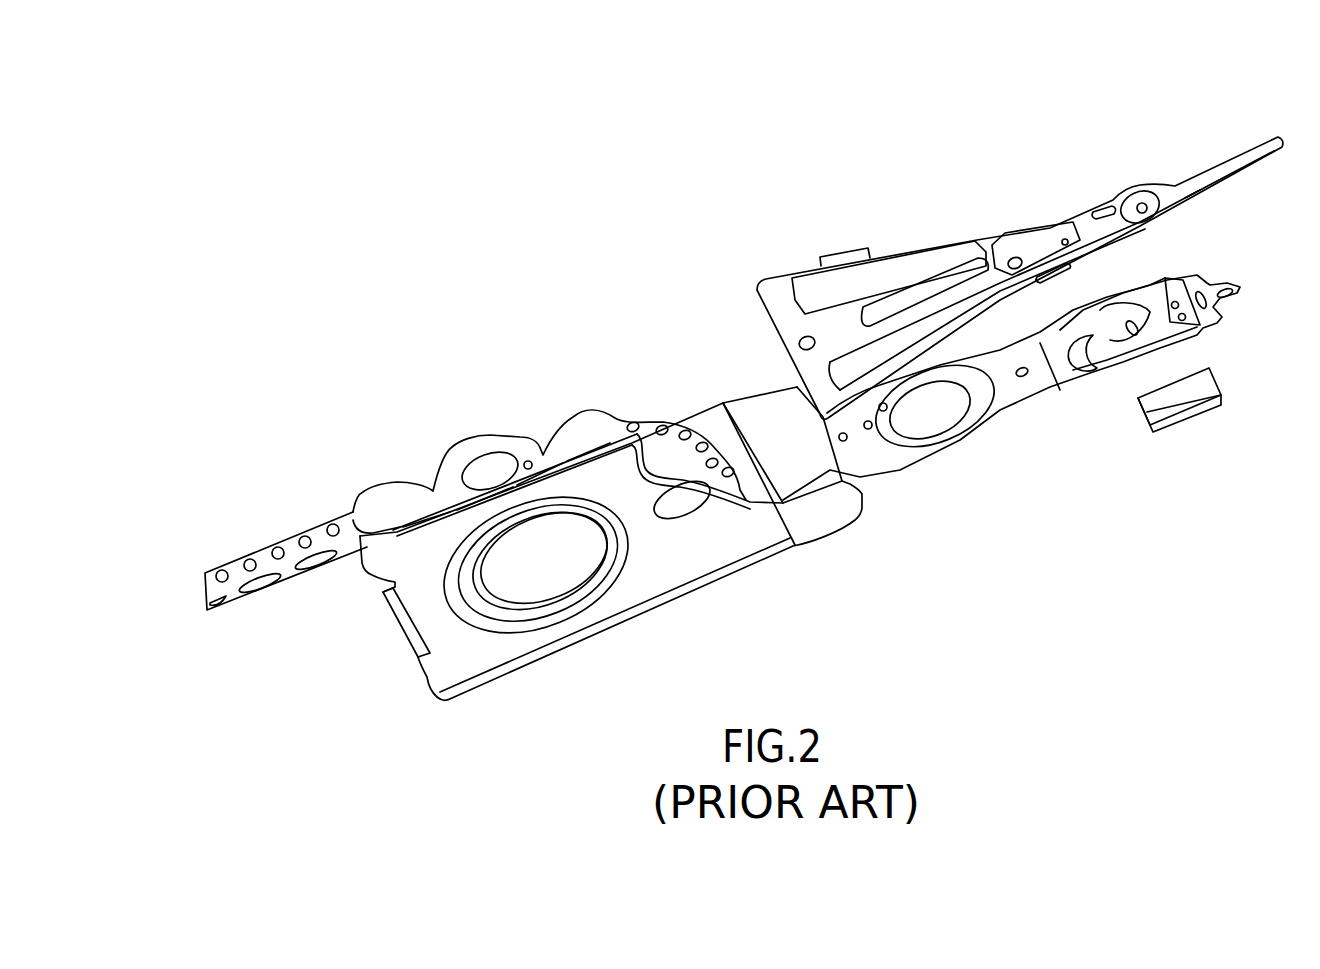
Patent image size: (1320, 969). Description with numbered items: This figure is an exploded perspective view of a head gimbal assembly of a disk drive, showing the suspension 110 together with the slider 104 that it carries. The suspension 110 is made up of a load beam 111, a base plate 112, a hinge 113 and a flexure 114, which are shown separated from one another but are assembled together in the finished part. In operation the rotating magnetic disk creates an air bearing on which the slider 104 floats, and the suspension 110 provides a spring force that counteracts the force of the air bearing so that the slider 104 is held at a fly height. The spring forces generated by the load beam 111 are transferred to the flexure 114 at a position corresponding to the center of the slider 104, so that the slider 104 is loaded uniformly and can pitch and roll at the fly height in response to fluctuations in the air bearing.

The slider 104 is at (1177, 395).
The suspension 110 is at (745, 367).
The load beam 111 is at (982, 242).
The base plate 112 is at (607, 495).
The hinge 113 is at (768, 415).
The flexure 114 is at (315, 538).